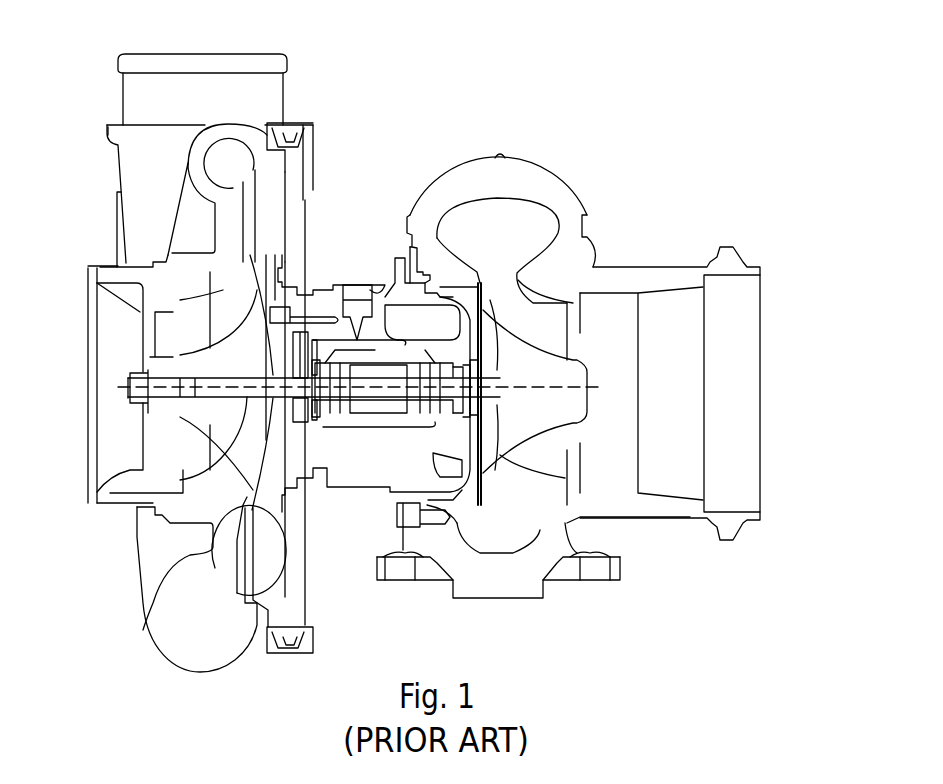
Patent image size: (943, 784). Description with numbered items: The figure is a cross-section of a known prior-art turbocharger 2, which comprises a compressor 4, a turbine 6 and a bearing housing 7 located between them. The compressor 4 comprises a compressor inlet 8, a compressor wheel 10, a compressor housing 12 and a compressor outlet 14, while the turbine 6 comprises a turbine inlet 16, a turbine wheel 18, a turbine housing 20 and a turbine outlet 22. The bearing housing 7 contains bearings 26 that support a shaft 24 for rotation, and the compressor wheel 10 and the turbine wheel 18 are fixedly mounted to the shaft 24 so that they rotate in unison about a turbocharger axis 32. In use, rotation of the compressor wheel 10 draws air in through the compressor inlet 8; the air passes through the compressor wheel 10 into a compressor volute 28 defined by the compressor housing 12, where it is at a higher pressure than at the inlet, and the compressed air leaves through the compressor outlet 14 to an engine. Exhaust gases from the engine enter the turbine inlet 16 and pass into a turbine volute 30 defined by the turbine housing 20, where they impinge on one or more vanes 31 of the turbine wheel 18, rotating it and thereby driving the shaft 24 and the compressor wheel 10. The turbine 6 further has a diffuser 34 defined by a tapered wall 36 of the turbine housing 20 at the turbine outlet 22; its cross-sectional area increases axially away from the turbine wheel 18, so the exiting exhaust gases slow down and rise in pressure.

The turbocharger 2 is at (607, 130).
The compressor 4 is at (310, 75).
The turbine 6 is at (690, 207).
The bearing housing 7 is at (390, 293).
The compressor inlet 8 is at (120, 330).
The compressor wheel 10 is at (193, 413).
The compressor housing 12 is at (192, 265).
The compressor outlet 14 is at (190, 93).
The turbine inlet 16 is at (575, 567).
The turbine wheel 18 is at (490, 440).
The turbine housing 20 is at (540, 190).
The turbine outlet 22 is at (772, 340).
The shaft 24 is at (187, 467).
The bearings 26 is at (423, 407).
The compressor volute 28 is at (200, 620).
The turbine volute 30 is at (487, 225).
The vanes 31 is at (500, 450).
The turbocharger axis 32 is at (533, 387).
The diffuser 34 is at (680, 407).
The tapered wall 36 is at (667, 497).